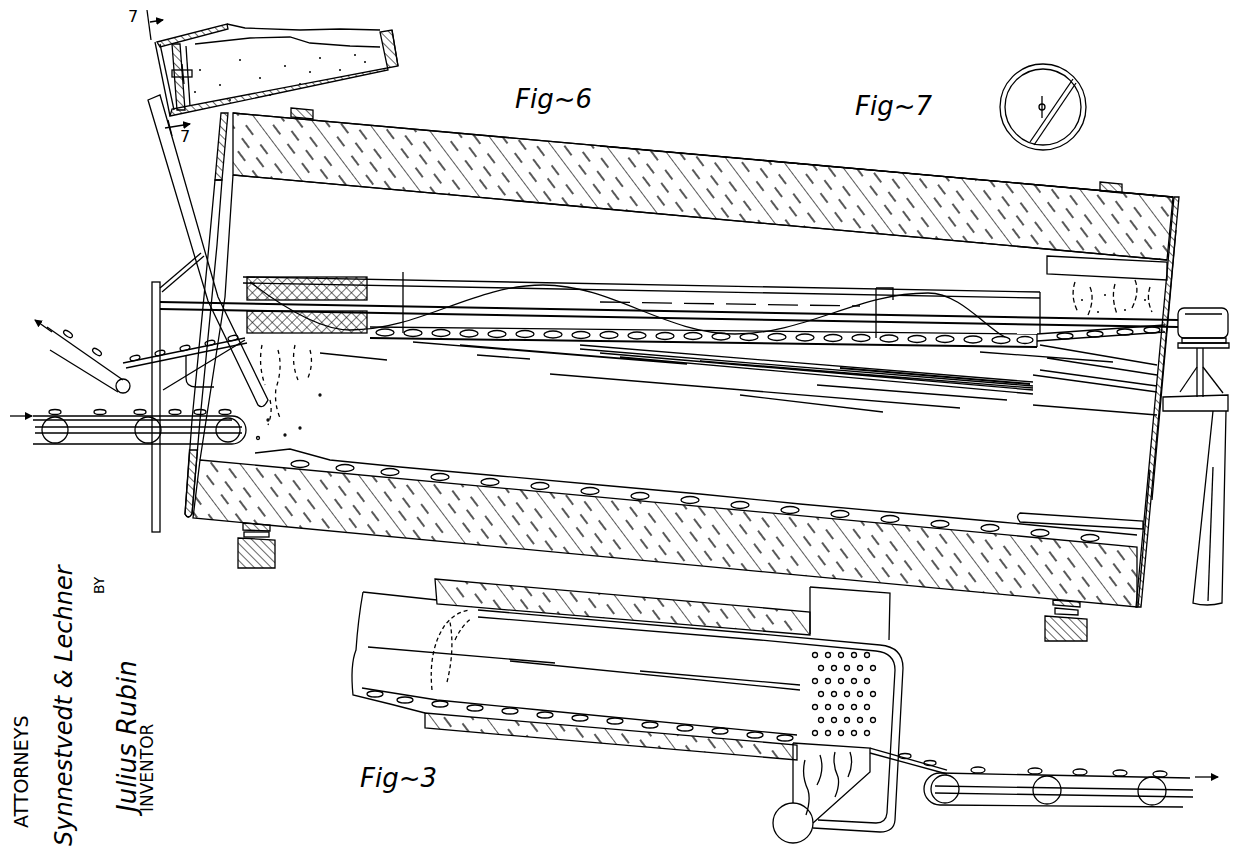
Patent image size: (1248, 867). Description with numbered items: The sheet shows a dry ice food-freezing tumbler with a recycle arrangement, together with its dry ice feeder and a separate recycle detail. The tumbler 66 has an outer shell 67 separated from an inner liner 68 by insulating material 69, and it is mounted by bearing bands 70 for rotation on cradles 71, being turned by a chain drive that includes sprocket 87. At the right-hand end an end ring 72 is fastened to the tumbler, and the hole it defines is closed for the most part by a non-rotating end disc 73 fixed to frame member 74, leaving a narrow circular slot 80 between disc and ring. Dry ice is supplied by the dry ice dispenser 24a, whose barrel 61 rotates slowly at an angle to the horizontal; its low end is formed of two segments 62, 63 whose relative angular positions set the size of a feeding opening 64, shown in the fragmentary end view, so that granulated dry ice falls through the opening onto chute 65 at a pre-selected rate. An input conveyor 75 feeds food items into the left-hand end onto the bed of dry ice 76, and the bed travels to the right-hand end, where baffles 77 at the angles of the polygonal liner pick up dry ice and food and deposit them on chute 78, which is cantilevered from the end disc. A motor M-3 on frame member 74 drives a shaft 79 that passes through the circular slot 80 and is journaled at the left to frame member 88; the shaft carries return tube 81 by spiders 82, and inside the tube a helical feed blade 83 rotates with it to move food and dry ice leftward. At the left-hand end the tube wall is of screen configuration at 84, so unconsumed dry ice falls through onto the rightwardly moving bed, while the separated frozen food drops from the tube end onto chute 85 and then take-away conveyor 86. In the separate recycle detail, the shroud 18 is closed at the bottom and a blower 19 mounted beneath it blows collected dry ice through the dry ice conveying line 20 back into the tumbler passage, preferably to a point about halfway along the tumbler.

In FIG. 6, the barrel 61 is at (320, 78).
In FIG. 6, the dry ice dispenser 24a is at (353, 75).
In FIG. 6, the segment 62 is at (166, 53).
In FIG. 6, the segment 63 is at (172, 66).
In FIG. 6, the chute 65 is at (182, 215).
In FIG. 6, the tumbler 66 is at (508, 137).
In FIG. 6, the outer shell 67 is at (663, 150).
In FIG. 6, the inner liner 68 is at (598, 208).
In FIG. 6, the insulating material 69 is at (768, 178).
In FIG. 6, the bearing bands 70 is at (300, 108).
In FIG. 6, the cradles 71 is at (276, 552).
In FIG. 6, the end ring 72 is at (1178, 253).
In FIG. 6, the end disc 73 is at (1153, 463).
In FIG. 6, the frame member 74 is at (1200, 530).
In FIG. 6, the input conveyor 75 is at (78, 447).
In FIG. 6, the bed of dry ice 76 is at (562, 476).
In FIG. 6, the baffles 77 is at (1047, 257).
In FIG. 6, the chute 78 is at (1075, 340).
In FIG. 6, the shaft 79 is at (688, 316).
In FIG. 6, the circular slot 80 is at (1158, 345).
In FIG. 6, the return tube 81 is at (458, 280).
In FIG. 6, the spiders 82 is at (418, 276).
In FIG. 6, the helical feed blade 83 is at (800, 300).
In FIG. 6, the screen wall 84 is at (315, 275).
In FIG. 6, the chute 85 is at (185, 366).
In FIG. 6, the take-away conveyor 86 is at (86, 350).
In FIG. 6, the sprocket 87 is at (181, 522).
In FIG. 6, the frame member 88 is at (152, 327).
In FIG. 6, the motor M-3 is at (1195, 284).
In FIG. 7, the feeding opening 64 is at (1058, 145).
In FIG. 3, the shroud 18 is at (810, 593).
In FIG. 3, the dry ice conveying line 20 is at (613, 630).
In FIG. 3, the blower 19 is at (772, 822).